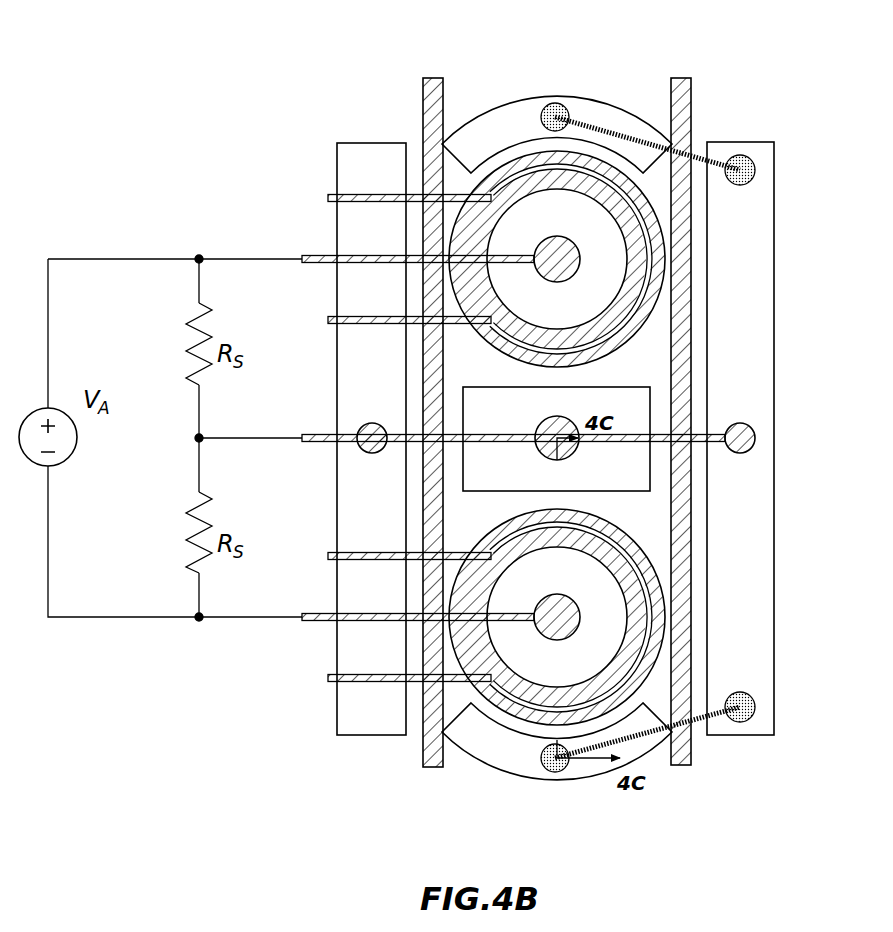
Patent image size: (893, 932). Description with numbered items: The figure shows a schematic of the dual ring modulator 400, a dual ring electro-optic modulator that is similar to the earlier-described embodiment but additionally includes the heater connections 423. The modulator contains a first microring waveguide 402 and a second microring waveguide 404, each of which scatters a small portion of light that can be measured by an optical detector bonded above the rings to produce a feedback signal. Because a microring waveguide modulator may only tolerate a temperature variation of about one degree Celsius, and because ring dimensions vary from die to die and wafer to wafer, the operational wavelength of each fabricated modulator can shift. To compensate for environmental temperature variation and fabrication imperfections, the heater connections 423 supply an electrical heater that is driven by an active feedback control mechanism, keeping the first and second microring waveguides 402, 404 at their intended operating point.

The dual ring modulator 400 is at (787, 53).
The first microring waveguide 402 is at (653, 228).
The second microring waveguide 404 is at (653, 603).
The heater connections 423 is at (328, 322).